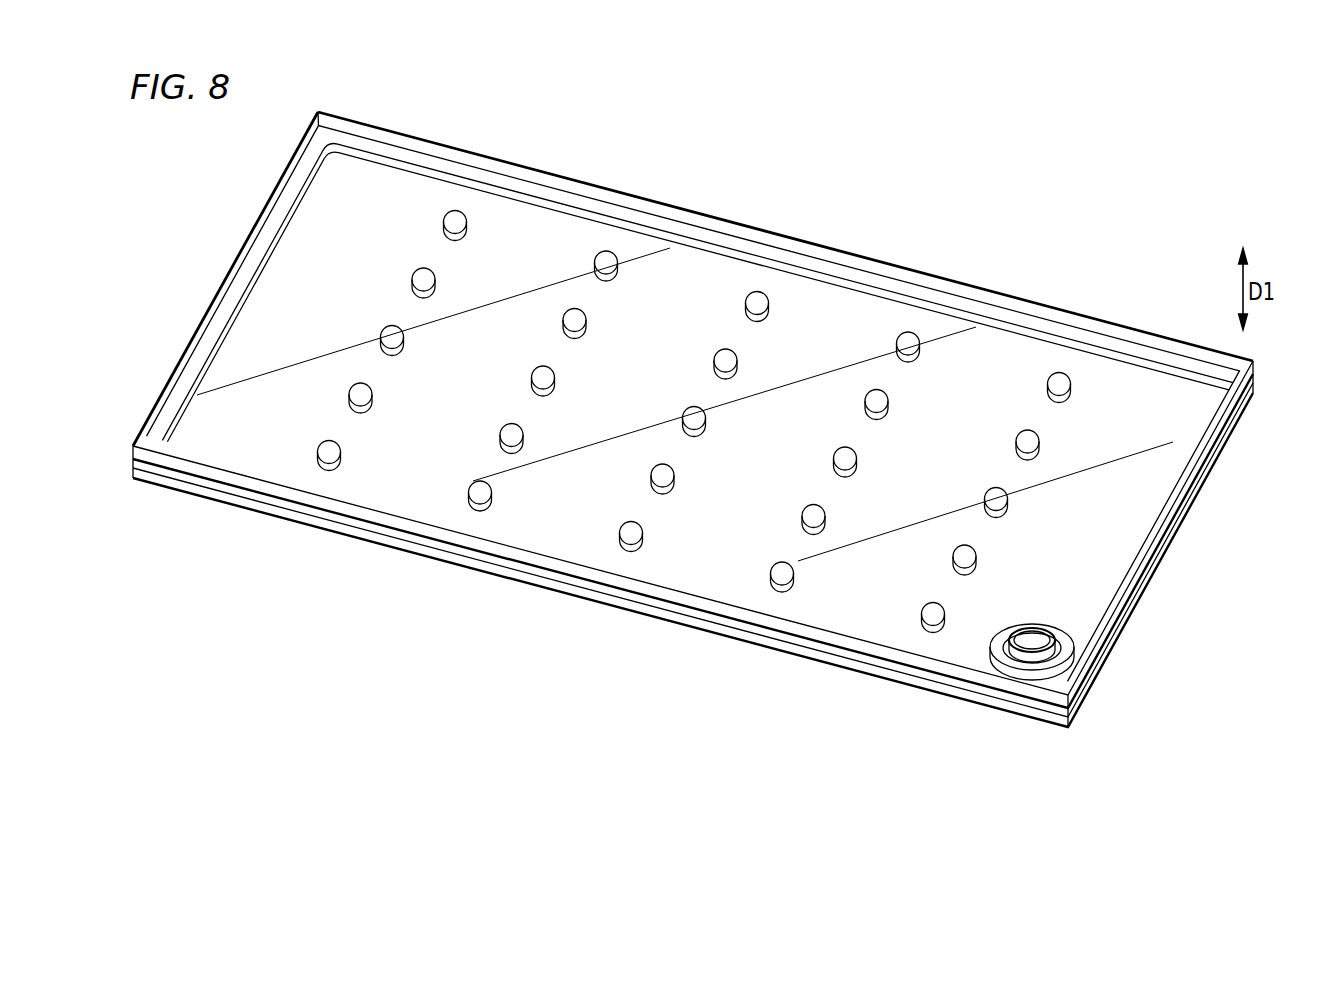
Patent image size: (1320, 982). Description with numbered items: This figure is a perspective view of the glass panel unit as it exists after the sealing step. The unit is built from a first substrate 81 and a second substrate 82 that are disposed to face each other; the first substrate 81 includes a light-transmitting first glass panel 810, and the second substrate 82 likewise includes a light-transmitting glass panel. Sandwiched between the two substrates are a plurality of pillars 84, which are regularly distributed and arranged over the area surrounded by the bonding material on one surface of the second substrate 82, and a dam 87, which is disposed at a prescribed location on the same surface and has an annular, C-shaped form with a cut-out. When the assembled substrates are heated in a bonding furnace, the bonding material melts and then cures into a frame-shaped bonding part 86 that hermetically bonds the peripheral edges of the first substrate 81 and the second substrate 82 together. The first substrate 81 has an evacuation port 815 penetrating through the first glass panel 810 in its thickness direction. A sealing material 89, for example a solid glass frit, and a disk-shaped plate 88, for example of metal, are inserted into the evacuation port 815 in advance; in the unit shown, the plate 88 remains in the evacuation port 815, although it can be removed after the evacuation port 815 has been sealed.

The first glass panel 810 is at (413, 200).
The first substrate 81 is at (212, 473).
The second substrate 82 is at (303, 518).
The bonding part 86 is at (465, 553).
The pillars 84 is at (597, 258).
The dam 87 is at (996, 650).
The plate 88 is at (1030, 643).
The sealing material 89 is at (1006, 652).
The evacuation port 815 is at (1041, 631).